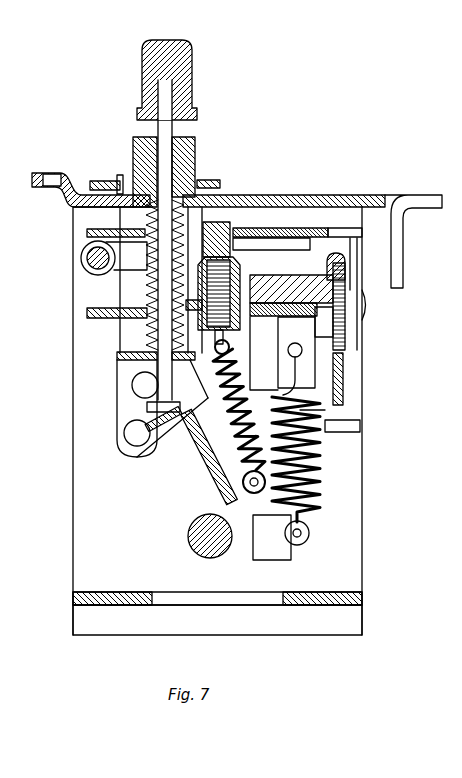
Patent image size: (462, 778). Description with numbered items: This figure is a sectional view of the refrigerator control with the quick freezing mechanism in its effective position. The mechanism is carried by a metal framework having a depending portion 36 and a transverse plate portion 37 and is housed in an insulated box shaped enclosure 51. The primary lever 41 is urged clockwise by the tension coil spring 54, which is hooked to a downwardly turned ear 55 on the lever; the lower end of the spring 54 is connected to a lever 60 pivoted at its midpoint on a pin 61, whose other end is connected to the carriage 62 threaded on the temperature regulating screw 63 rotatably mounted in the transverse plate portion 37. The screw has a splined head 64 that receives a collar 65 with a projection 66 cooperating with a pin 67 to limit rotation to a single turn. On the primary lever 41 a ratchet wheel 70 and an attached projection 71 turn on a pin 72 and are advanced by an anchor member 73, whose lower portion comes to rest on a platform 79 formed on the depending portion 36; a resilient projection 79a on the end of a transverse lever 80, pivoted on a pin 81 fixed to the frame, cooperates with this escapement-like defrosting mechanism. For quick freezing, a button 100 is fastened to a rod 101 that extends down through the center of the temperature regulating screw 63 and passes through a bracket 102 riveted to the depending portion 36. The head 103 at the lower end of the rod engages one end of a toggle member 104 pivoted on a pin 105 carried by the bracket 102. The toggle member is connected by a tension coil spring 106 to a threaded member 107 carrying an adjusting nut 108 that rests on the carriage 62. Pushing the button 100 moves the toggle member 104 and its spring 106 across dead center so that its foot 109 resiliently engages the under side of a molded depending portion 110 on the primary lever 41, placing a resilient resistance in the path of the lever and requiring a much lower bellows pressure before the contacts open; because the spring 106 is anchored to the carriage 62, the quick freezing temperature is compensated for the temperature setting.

The depending portion 36 is at (343, 548).
The transverse plate portion 37 is at (350, 205).
The primary lever 41 is at (298, 306).
The insulated box shaped enclosure 51 is at (265, 625).
The tension coil spring 54 is at (322, 472).
The downwardly turned ear 55 is at (296, 352).
The lever 60 is at (278, 545).
The pin 61 is at (214, 555).
The carriage 62 is at (92, 313).
The temperature regulating screw 63 is at (147, 293).
The splined head 64 is at (186, 152).
The collar 65 is at (205, 182).
The projection 66 is at (100, 183).
The pin 67 is at (120, 175).
The ratchet wheel 70 is at (340, 330).
The projection 71 is at (352, 251).
The pin 72 is at (366, 310).
The anchor member 73 is at (345, 364).
The platform 79 is at (355, 427).
The resilient projection 79a is at (362, 232).
The transverse lever 80 is at (312, 230).
The pin 81 is at (88, 259).
The button 100 is at (188, 72).
The rod 101 is at (166, 128).
The bracket 102 is at (127, 373).
The head 103 is at (147, 407).
The toggle member 104 is at (190, 418).
The pin 105 is at (213, 448).
The tension coil spring 106 is at (228, 497).
The threaded member 107 is at (238, 290).
The adjusting nut 108 is at (232, 228).
The foot 109 is at (318, 411).
The depending portion 110 is at (268, 368).